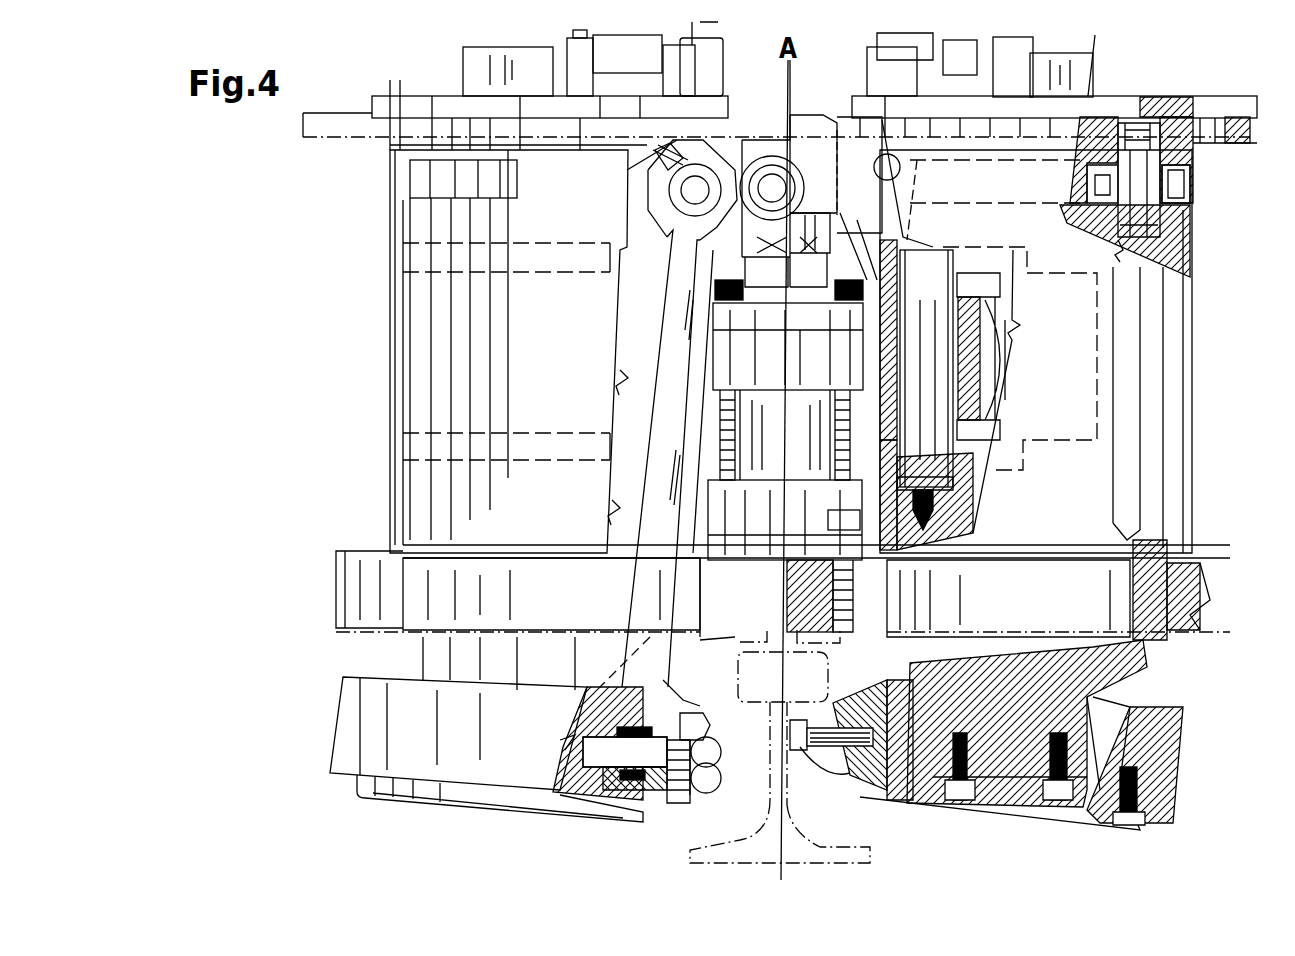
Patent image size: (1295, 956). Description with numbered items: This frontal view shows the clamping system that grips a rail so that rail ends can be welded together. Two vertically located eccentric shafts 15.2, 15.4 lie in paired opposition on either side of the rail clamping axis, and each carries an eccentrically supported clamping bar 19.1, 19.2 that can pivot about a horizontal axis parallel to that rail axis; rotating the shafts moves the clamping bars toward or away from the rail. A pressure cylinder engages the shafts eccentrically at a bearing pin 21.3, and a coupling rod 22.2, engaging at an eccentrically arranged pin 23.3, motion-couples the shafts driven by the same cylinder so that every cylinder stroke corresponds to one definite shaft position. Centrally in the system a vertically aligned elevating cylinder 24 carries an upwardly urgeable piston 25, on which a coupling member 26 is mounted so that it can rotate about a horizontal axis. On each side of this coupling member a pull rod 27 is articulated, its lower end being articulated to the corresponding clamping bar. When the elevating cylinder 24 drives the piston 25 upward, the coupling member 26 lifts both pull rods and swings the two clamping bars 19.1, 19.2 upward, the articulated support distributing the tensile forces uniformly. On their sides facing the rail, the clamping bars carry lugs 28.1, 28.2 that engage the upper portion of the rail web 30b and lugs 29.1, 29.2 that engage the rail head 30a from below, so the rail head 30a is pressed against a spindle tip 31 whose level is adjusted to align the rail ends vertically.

The eccentric shaft 15.2 is at (437, 658).
The eccentric shaft 15.4 is at (1133, 667).
The clamping bar 19.1 is at (357, 701).
The clamping bar 19.2 is at (1153, 713).
The bearing pin 21.3 is at (930, 463).
The coupling rod 22.2 is at (1190, 183).
The eccentrically arranged pin 23.3 is at (1140, 208).
The elevating cylinder 24 is at (853, 380).
The piston 25 is at (808, 280).
The coupling member 26 is at (769, 125).
The pull rod 27 is at (627, 665).
The lug 28.1 is at (717, 770).
The lug 28.2 is at (797, 738).
The lug 29.1 is at (745, 672).
The lug 29.2 is at (623, 703).
The rail head 30a is at (907, 662).
The rail web 30b is at (787, 800).
The spindle tip 31 is at (743, 657).